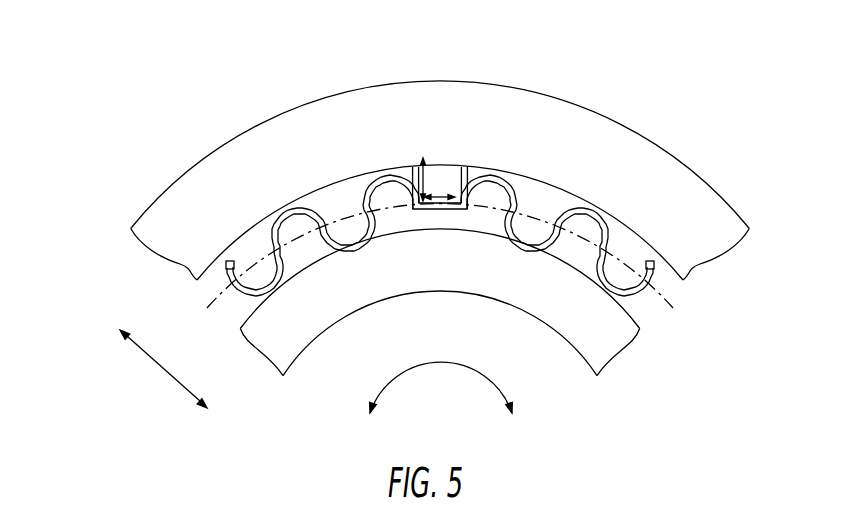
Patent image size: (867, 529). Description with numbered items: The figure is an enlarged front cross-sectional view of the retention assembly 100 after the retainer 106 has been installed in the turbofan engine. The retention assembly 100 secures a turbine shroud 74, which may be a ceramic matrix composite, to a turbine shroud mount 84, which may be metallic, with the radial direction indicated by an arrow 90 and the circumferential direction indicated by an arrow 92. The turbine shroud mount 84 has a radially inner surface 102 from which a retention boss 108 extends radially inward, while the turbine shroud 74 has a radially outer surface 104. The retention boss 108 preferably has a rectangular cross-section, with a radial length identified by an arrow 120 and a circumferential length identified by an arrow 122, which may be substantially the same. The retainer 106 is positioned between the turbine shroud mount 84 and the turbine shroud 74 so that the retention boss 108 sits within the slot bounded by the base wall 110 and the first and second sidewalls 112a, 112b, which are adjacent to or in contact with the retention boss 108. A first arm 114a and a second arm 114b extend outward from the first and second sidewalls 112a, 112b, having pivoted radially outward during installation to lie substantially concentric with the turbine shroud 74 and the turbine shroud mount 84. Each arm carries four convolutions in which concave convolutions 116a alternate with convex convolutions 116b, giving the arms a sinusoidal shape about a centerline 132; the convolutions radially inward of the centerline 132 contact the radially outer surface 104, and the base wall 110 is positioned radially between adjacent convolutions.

The turbine shroud 74 is at (408, 294).
The turbine shroud mount 84 is at (628, 127).
The arrow identifying the radial direction 90 is at (184, 388).
The arrow identifying the circumferential direction 92 is at (465, 368).
The retention assembly 100 is at (183, 143).
The radially inner surface 102 is at (684, 281).
The radially outer surface 104 is at (642, 321).
The retainer 106 is at (219, 288).
The retention boss 108 is at (464, 166).
The base wall 110 is at (446, 216).
The first sidewall 112a is at (415, 208).
The second sidewall 112b is at (470, 210).
The first arm 114a is at (333, 203).
The second arm 114b is at (548, 204).
The concave convolutions 116a is at (300, 275).
The convex convolutions 116b is at (268, 226).
The arrow identifying the radial length 120 is at (424, 156).
The arrow identifying the circumferential length 122 is at (434, 196).
The centerline 132 is at (667, 305).